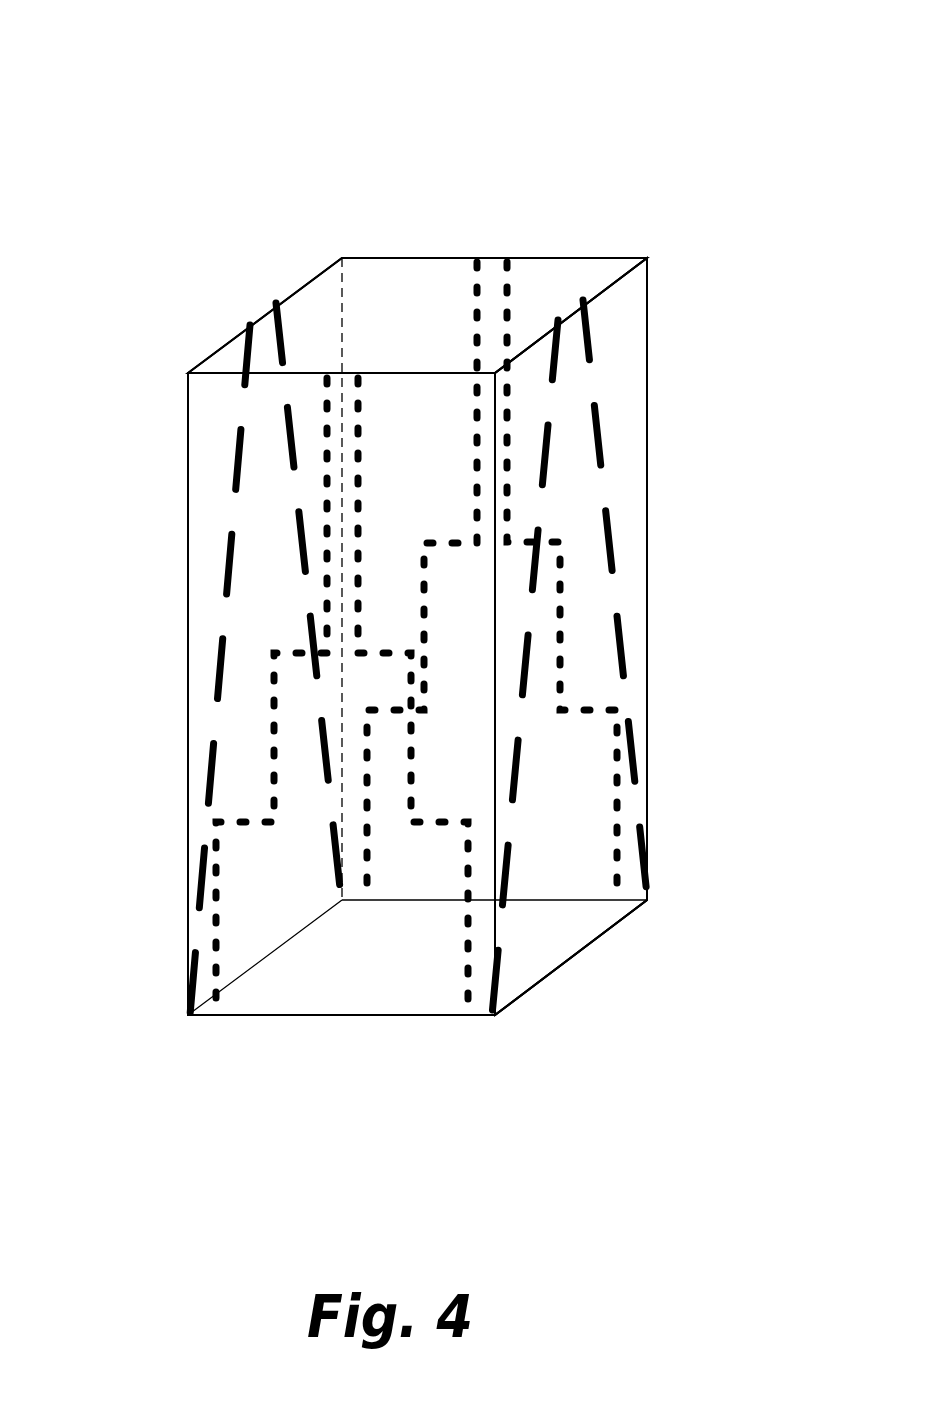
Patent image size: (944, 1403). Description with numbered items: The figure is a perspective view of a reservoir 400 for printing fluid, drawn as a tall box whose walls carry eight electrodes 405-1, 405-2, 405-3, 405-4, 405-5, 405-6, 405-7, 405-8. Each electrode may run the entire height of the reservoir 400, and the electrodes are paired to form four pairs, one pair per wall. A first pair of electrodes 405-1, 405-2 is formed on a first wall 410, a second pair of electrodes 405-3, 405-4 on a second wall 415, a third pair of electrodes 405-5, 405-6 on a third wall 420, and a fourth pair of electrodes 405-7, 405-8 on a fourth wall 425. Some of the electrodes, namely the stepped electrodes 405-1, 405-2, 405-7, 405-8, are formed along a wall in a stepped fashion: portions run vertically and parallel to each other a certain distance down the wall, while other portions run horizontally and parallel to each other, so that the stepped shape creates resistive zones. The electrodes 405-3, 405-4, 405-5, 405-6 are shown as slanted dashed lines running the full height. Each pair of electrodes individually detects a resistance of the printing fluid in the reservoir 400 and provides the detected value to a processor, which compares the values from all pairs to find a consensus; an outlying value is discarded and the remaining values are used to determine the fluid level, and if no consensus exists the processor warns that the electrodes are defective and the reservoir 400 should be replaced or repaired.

The reservoir 400 is at (253, 78).
The electrode 405-1 is at (507, 253).
The electrode 405-2 is at (474, 253).
The electrode 405-3 is at (275, 297).
The electrode 405-4 is at (247, 318).
The electrode 405-5 is at (556, 310).
The electrode 405-6 is at (583, 298).
The electrode 405-7 is at (217, 1022).
The electrode 405-8 is at (467, 1020).
The first wall 410 is at (433, 298).
The second wall 415 is at (227, 358).
The third wall 420 is at (623, 377).
The fourth wall 425 is at (385, 995).